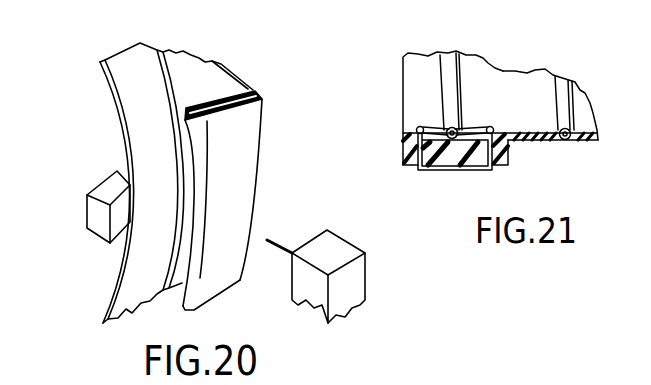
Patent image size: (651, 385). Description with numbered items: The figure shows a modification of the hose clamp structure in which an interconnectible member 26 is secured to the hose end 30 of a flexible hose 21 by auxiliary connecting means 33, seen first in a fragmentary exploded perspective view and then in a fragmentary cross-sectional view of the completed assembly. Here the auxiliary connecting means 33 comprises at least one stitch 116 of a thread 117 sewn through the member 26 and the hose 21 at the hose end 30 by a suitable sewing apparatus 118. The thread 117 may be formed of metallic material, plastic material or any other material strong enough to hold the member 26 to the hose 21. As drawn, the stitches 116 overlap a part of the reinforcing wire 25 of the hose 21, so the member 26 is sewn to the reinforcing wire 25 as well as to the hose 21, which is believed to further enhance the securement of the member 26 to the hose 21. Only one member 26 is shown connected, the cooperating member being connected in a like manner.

In FIG. 20, the hose 21 is at (205, 62).
In FIG. 21, the hose 21 is at (547, 78).
In FIG. 21, the reinforcing wire 25 is at (456, 128).
In FIG. 20, the member 26 is at (250, 135).
In FIG. 21, the member 26 is at (410, 163).
In FIG. 20, the hose end 30 is at (117, 112).
In FIG. 21, the hose end 30 is at (402, 65).
In FIG. 20, the auxiliary connecting means 33 is at (98, 274).
In FIG. 21, the auxiliary connecting means 33 is at (390, 146).
In FIG. 21, the stitch 116 is at (460, 170).
In FIG. 21, the thread 117 is at (473, 170).
In FIG. 20, the sewing apparatus 118 is at (360, 283).